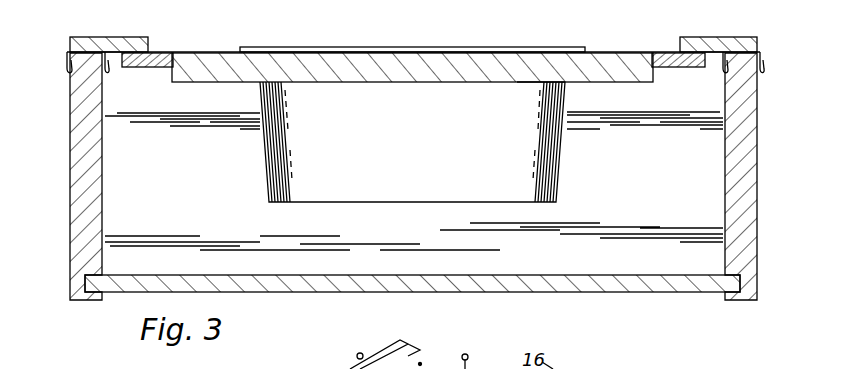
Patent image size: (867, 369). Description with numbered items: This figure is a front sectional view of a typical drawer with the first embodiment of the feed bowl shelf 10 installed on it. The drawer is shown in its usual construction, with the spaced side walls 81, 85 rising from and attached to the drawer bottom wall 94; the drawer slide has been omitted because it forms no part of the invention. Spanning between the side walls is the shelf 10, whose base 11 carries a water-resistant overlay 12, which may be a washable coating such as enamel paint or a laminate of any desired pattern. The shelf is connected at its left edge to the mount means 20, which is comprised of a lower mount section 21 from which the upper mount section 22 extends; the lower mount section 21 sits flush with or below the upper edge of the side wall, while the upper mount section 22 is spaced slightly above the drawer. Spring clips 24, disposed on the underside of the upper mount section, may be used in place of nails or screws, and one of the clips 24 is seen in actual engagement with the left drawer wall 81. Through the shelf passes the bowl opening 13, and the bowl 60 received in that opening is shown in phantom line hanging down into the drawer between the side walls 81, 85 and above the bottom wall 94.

The shelf 10 is at (226, 123).
The base 11 is at (213, 65).
The water-resistant overlay 12 is at (312, 50).
The bowl opening 13 is at (553, 76).
The mount means 20 is at (665, 38).
The lower mount section 21 is at (143, 68).
The upper mount section 22 is at (97, 37).
The spring clip 24 is at (67, 63).
The bowl 60 is at (567, 132).
The left drawer wall 81 is at (70, 153).
The drawer side wall 85 is at (758, 162).
The drawer bottom wall 94 is at (553, 292).